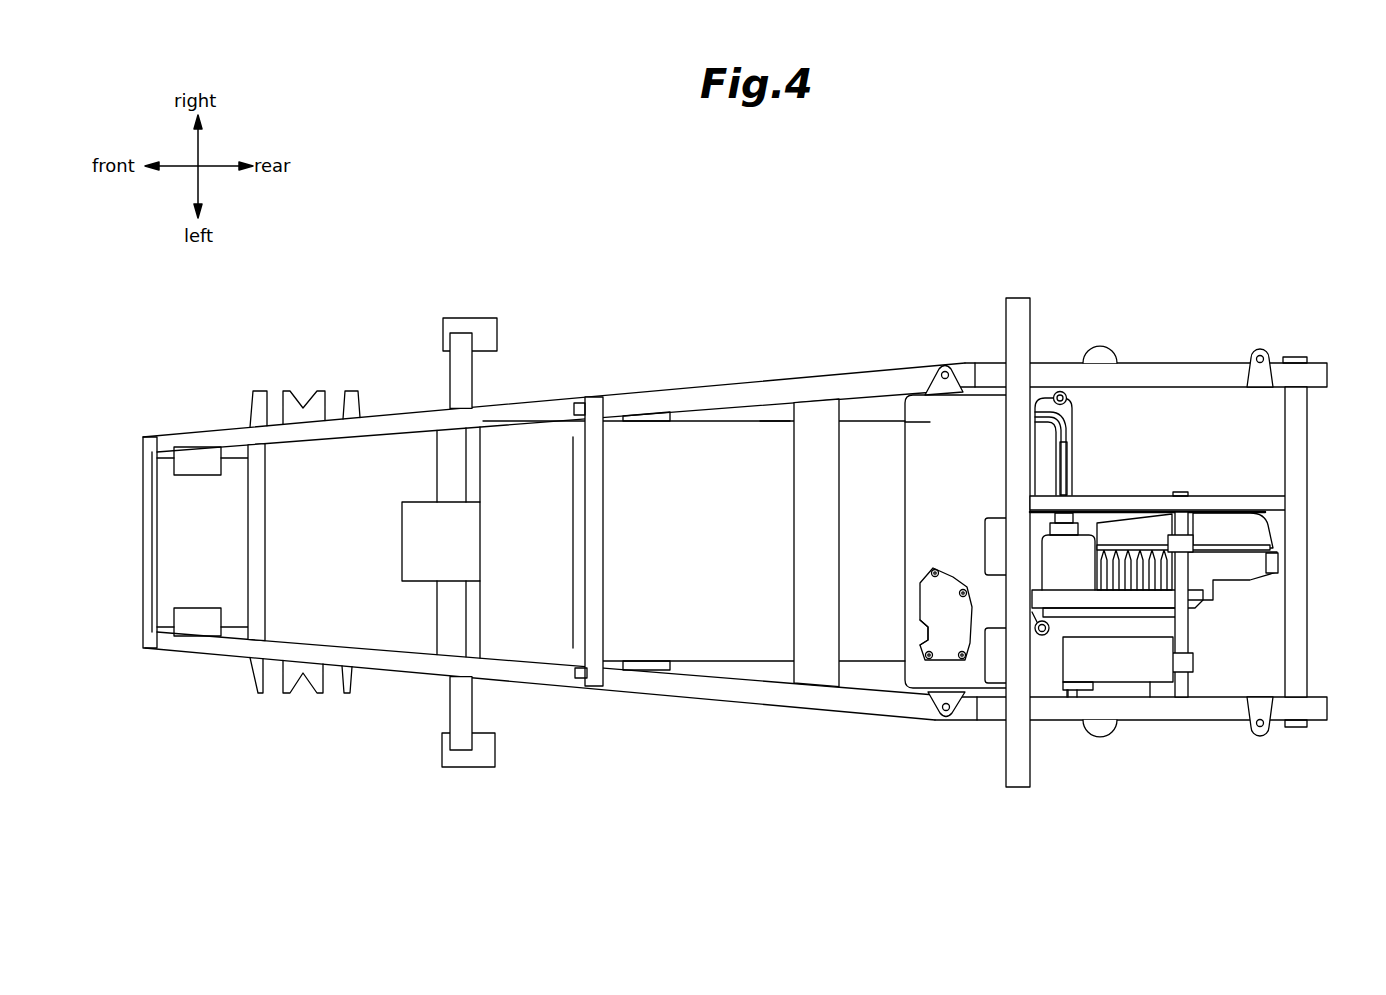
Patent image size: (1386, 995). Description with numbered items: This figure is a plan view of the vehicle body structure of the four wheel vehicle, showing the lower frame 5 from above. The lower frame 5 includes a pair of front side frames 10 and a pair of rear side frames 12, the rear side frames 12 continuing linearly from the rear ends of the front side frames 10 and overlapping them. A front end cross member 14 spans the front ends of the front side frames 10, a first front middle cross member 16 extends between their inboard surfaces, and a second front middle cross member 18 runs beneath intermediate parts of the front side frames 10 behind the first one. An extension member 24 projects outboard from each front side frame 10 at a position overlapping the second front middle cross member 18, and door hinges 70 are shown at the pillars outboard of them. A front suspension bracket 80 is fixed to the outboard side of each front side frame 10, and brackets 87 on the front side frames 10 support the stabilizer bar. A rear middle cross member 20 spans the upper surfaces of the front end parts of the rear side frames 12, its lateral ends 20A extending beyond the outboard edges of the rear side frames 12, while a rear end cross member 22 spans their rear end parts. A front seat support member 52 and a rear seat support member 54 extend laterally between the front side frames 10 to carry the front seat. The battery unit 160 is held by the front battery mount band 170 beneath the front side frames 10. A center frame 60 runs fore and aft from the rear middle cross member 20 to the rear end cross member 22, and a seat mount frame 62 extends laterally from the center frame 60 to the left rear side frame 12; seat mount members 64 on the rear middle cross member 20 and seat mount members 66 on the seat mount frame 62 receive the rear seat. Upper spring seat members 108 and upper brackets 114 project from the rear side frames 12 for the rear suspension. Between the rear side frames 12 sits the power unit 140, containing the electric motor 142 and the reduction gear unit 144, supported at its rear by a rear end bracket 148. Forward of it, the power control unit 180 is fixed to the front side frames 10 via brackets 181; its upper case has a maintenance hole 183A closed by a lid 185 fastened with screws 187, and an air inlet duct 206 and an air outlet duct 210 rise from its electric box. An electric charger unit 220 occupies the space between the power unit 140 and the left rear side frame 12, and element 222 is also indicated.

The lower frame 5 is at (735, 549).
The front side frame 10 is at (688, 382).
The rear side frame 12 is at (1212, 370).
The front end cross member 14 is at (152, 568).
The first front middle cross member 16 is at (265, 586).
The second front middle cross member 18 is at (443, 620).
The rear middle cross member 20 is at (1006, 462).
The lateral end 20A is at (1017, 297).
The rear end cross member 22 is at (1300, 678).
The extension member 24 is at (465, 386).
The front seat support member 52 is at (603, 520).
The rear seat support member 54 is at (828, 477).
The center frame 60 is at (1236, 500).
The seat mount frame 62 is at (1182, 633).
The seat mount member 64 is at (990, 526).
The seat mount member 66 is at (1188, 536).
The door hinge 70 is at (480, 323).
The front suspension bracket 80 is at (293, 397).
The bracket 87 is at (198, 458).
The upper spring seat member 108 is at (1100, 347).
The upper bracket 114 is at (1262, 349).
The power unit 140 is at (1203, 522).
The electric motor 142 is at (1158, 583).
The reduction gear unit 144 is at (1257, 520).
The rear end bracket 148 is at (1280, 560).
The battery unit 160 is at (692, 640).
The front battery mount band 170 is at (643, 665).
The power control unit 180 is at (926, 418).
The bracket 181 is at (962, 366).
The maintenance hole 183A is at (920, 652).
The lid 185 is at (905, 680).
The screw 187 is at (931, 570).
The air inlet duct 206 is at (1050, 635).
The air outlet duct 210 is at (1068, 397).
The electric charger unit 220 is at (1157, 688).
The bolt 222 is at (1075, 691).